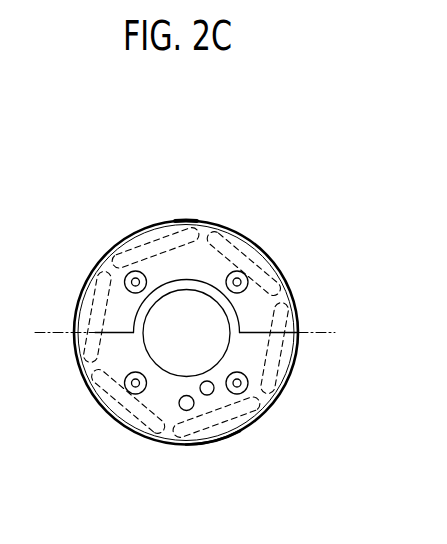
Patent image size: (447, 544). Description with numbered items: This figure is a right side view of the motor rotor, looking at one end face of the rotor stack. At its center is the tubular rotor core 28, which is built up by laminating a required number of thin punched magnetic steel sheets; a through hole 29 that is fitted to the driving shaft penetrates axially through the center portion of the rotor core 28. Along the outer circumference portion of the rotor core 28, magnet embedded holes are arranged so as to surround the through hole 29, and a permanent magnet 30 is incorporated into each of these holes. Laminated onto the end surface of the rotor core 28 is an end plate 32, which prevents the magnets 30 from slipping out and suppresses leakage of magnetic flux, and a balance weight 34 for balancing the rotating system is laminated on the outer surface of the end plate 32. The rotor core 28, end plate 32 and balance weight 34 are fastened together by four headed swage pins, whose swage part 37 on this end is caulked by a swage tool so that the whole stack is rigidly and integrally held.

The rotor core 28 is at (253, 239).
The through hole 29 is at (169, 357).
The permanent magnet 30 is at (218, 440).
The end plate 32 is at (250, 353).
The balance weight 34 is at (193, 257).
The swage part 37 is at (247, 281).